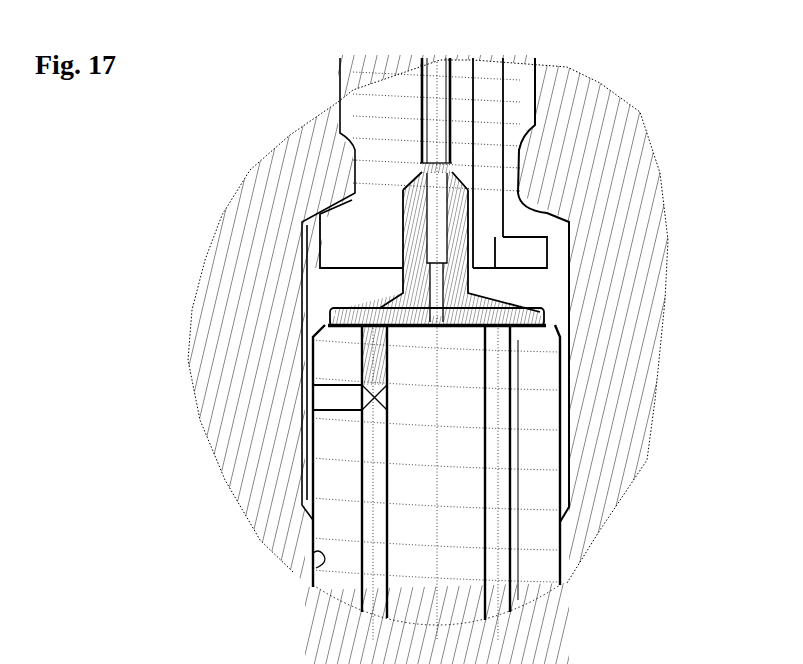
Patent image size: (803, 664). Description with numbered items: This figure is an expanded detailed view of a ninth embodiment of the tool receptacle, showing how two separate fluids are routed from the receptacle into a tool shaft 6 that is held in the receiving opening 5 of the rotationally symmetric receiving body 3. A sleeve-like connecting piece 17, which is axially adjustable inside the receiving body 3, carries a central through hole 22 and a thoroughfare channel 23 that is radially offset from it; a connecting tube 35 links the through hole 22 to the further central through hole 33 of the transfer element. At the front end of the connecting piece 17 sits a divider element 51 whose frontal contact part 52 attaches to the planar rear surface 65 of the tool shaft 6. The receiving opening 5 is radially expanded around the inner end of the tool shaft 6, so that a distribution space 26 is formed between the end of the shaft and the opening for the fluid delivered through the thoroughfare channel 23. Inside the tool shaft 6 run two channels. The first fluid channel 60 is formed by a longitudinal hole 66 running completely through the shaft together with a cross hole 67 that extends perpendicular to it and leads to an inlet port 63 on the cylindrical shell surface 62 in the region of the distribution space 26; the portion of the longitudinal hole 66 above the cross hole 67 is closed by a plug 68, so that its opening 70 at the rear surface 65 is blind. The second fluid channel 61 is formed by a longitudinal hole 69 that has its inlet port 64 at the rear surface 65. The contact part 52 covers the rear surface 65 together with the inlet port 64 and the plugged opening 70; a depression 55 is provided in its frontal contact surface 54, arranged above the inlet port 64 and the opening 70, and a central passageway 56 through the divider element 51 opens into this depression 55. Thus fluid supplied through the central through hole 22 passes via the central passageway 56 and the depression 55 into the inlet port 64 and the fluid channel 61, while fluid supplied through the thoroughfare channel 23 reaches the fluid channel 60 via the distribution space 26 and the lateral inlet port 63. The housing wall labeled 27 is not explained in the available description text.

The receiving body 3 is at (273, 533).
The receiving opening 5 is at (316, 568).
The tool shaft 6 is at (537, 525).
The sleeve-like connecting piece 17 is at (388, 118).
The central through hole 22 is at (428, 178).
The thoroughfare channel 23 is at (487, 115).
The distribution space 26 is at (313, 477).
The housing wall 27 is at (545, 222).
The further central through hole 33 is at (506, 659).
The connecting tube 35 is at (421, 72).
The divider element 51 is at (403, 262).
The frontal contact part 52 is at (540, 317).
The frontal contact surface 54 is at (540, 325).
The depression 55 is at (467, 327).
The central passageway 56 is at (477, 293).
The first fluid channel 60 is at (358, 578).
The second fluid channel 61 is at (522, 577).
The cylindrical shell surface 62 is at (313, 446).
The inlet port 63 is at (340, 397).
The inlet port 64 is at (517, 255).
The rear surface 65 is at (385, 307).
The longitudinal hole 66 is at (372, 527).
The cross hole 67 is at (337, 398).
The plug 68 is at (370, 343).
The longitudinal hole 69 is at (497, 453).
The opening 70 is at (330, 315).